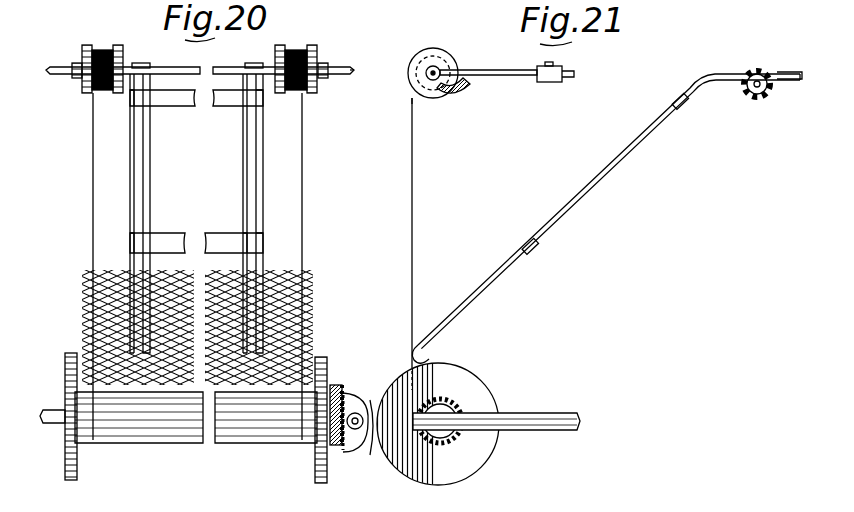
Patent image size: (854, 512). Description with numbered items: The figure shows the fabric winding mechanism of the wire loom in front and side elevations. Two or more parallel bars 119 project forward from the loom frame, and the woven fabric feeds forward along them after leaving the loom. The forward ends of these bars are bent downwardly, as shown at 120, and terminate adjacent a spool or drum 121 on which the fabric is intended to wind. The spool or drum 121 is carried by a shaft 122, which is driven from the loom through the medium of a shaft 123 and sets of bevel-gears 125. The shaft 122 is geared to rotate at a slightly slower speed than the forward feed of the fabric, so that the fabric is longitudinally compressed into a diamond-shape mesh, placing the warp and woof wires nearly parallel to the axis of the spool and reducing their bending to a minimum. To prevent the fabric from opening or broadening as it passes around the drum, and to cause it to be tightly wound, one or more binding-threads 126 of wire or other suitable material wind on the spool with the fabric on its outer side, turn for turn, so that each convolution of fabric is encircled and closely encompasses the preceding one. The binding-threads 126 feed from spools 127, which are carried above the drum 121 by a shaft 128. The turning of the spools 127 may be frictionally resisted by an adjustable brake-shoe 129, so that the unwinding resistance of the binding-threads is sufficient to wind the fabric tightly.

In FIG. 20, the parallel bars 119 is at (152, 61).
In FIG. 21, the parallel bars 119 is at (720, 73).
In FIG. 20, the downwardly bent forward ends of the bars 120 is at (243, 178).
In FIG. 21, the downwardly bent forward ends of the bars 120 is at (590, 186).
In FIG. 20, the spool or drum 121 is at (260, 445).
In FIG. 21, the spool or drum 121 is at (440, 380).
In FIG. 20, the shaft 122 is at (58, 424).
In FIG. 20, the shaft 123 is at (362, 434).
In FIG. 21, the shaft 123 is at (532, 418).
In FIG. 20, the bevel-gears 125 is at (338, 395).
In FIG. 21, the bevel-gears 125 is at (415, 399).
In FIG. 20, the binding-threads 126 is at (93, 186).
In FIG. 21, the binding-threads 126 is at (414, 190).
In FIG. 20, the spools 127 is at (88, 55).
In FIG. 21, the spools 127 is at (437, 55).
In FIG. 20, the shaft 128 is at (347, 78).
In FIG. 21, the shaft 128 is at (430, 78).
In FIG. 21, the adjustable brake-shoe 129 is at (466, 90).